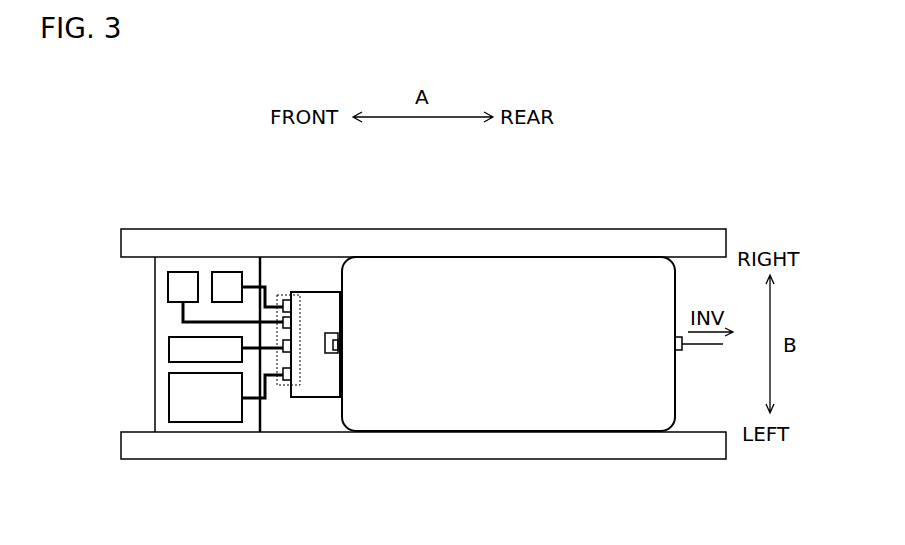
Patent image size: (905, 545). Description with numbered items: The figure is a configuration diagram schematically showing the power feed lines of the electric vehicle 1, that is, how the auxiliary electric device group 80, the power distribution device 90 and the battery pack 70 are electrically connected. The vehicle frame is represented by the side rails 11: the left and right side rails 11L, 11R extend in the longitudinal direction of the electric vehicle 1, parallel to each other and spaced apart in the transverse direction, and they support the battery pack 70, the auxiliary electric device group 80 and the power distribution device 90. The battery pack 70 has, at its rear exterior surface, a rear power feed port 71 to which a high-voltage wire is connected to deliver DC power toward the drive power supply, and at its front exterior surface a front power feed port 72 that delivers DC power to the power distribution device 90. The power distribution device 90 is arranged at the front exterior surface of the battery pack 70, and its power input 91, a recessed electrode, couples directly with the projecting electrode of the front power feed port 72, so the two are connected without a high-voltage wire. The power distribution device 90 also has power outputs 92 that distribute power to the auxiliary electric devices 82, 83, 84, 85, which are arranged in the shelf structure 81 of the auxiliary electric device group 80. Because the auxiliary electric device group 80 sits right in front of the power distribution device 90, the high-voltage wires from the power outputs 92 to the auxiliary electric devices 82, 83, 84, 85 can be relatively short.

The electric vehicle 1 is at (108, 166).
The side rails 11 is at (101, 297).
The right side rail 11R is at (131, 252).
The left side rail 11L is at (137, 437).
The battery pack 70 is at (416, 268).
The rear power feed port 71 is at (679, 352).
The front power feed port 72 is at (345, 347).
The auxiliary electric device group 80 is at (258, 183).
The shelf structure 81 is at (165, 262).
The auxiliary electric device 82 is at (183, 280).
The auxiliary electric device 83 is at (228, 278).
The auxiliary electric device 84 is at (185, 355).
The auxiliary electric device 85 is at (225, 410).
The power distribution device 90 is at (305, 297).
The power input 91 is at (331, 333).
The power outputs 92 is at (280, 388).